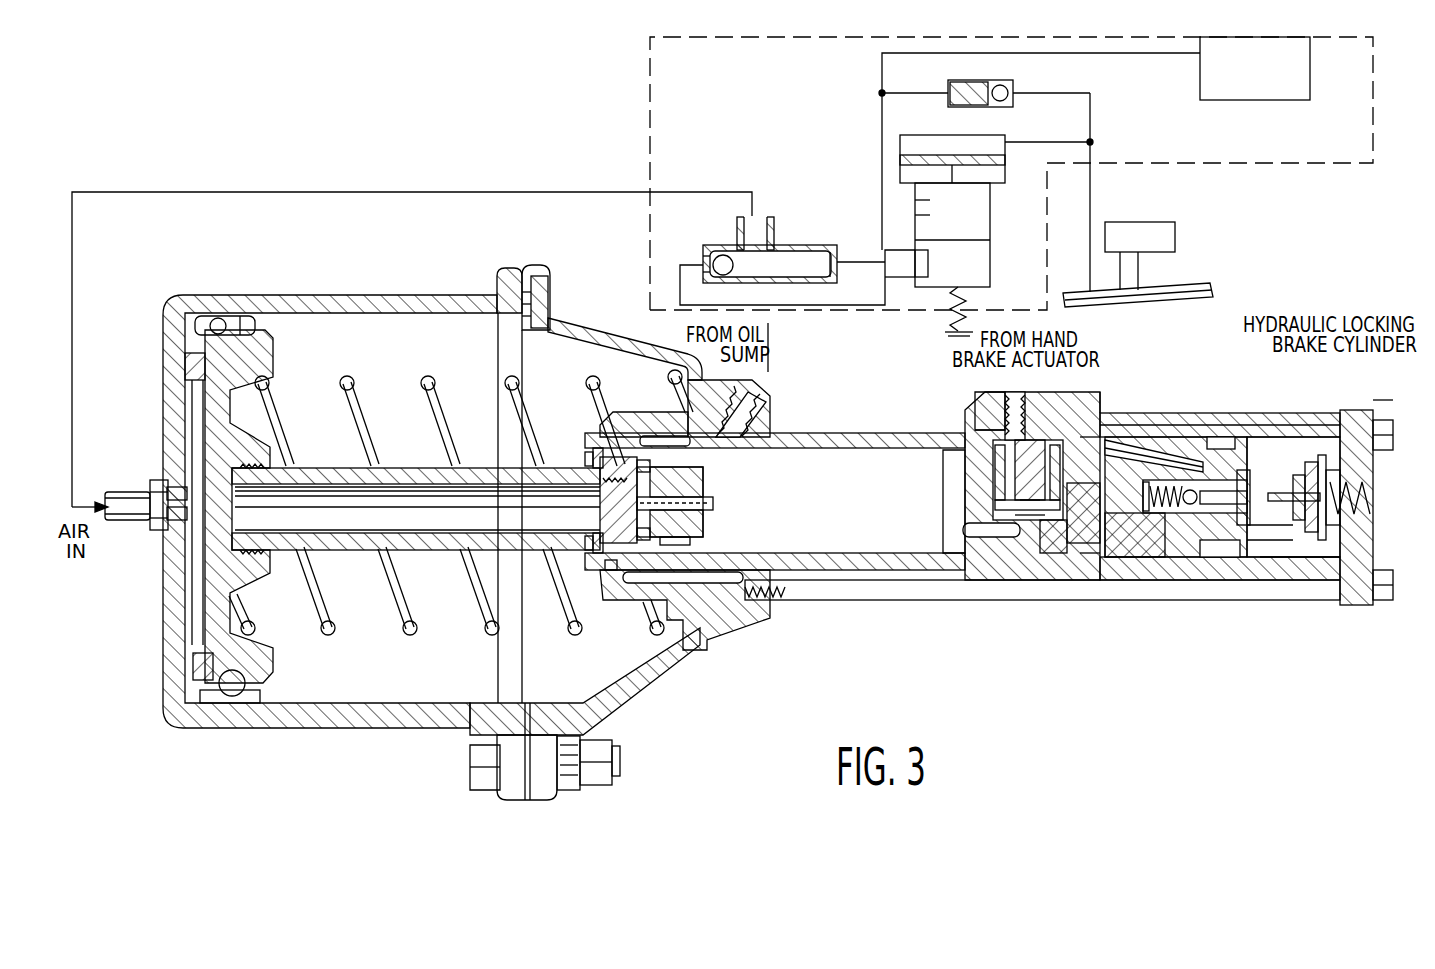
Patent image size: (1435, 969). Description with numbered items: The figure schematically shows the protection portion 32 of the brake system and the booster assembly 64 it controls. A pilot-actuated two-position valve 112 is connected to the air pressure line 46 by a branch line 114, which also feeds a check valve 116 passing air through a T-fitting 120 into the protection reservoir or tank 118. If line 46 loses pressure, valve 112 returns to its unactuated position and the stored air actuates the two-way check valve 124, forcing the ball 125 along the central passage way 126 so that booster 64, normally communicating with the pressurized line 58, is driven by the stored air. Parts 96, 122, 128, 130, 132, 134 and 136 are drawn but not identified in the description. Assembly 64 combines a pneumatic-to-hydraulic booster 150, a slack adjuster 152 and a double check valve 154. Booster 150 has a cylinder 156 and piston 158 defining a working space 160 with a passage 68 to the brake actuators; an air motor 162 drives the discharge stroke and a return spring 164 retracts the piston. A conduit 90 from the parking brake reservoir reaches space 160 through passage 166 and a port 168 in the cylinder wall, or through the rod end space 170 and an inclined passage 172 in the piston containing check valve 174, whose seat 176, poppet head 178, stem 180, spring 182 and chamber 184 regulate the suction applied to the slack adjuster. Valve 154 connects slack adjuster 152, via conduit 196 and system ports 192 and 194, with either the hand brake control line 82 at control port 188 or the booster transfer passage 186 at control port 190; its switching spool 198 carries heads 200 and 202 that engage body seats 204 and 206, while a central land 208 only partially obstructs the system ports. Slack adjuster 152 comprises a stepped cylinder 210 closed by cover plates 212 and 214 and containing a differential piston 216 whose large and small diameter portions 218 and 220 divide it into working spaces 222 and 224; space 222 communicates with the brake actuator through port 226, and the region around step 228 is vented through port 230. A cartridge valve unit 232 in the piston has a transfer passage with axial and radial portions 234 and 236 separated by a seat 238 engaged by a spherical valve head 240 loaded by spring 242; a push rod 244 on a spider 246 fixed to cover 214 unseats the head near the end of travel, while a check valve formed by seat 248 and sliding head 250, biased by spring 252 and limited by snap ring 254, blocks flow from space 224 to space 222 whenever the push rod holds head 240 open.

The protection portion 32 is at (646, 128).
The air pressure line 46 is at (1210, 290).
The pressurized line 58 is at (858, 262).
The booster 64 is at (614, 312).
The passage 68 is at (1410, 357).
The hand brake control line 82 is at (1033, 428).
The conduit 90 is at (755, 405).
The pedal pad 96 is at (1175, 240).
The two-position valve 112 is at (992, 215).
The branch line 114 is at (1093, 142).
The check valve 116 is at (1010, 105).
The protection reservoir 118 is at (1310, 70).
The T-fitting 120 is at (879, 93).
The air line 122 is at (822, 305).
The two-way check valve 124 is at (817, 240).
The ball 125 is at (722, 255).
The central passage way 126 is at (700, 192).
The valve port 128 is at (705, 258).
The valve outlet 130 is at (834, 266).
The valve fitting 132 is at (766, 220).
The air inlet shaft 134 is at (125, 495).
The inlet nut 136 is at (158, 488).
The pneumatic-to-hydraulic booster 150 is at (825, 432).
The slack adjuster 152 is at (1247, 603).
The double check valve 154 is at (1090, 396).
The cylinder 156 is at (878, 433).
The reciprocable piston 158 is at (598, 455).
The working space 160 is at (841, 529).
The air motor 162 is at (186, 356).
The return spring 164 is at (352, 384).
The passage 166 is at (660, 431).
The port 168 is at (660, 440).
The rod end space 170 is at (597, 440).
The passage 172 is at (697, 472).
The check valve 174 is at (748, 483).
The seat 176 is at (703, 490).
The poppet head 178 is at (713, 503).
The reciprocable stem 180 is at (703, 522).
The coil compression spring 182 is at (620, 572).
The chamber 184 is at (690, 542).
The booster transfer passage 186 is at (975, 535).
The control port 188 is at (1016, 398).
The control port 190 is at (1023, 520).
The system port 192 is at (1060, 450).
The system port 194 is at (1068, 520).
The conduit 196 is at (1084, 482).
The switching spool 198 is at (962, 470).
The valve head 200 is at (1088, 432).
The valve head 202 is at (968, 517).
The body seat 204 is at (967, 422).
The body seat 206 is at (1033, 517).
The central land 208 is at (1015, 487).
The stepped cylinder 210 is at (1262, 415).
The cover plate 212 is at (1092, 557).
The cover plate 214 is at (1365, 458).
The differential area reciprocable piston 216 is at (1215, 557).
The large diameter portion 218 is at (1177, 538).
The small diameter portion 220 is at (1249, 455).
The working space 222 is at (1163, 466).
The working space 224 is at (1298, 560).
The port 226 is at (1372, 498).
The step 228 is at (1213, 545).
The port 230 is at (1222, 425).
The cartridge type valve unit 232 is at (1150, 504).
The axial portion 234 is at (1250, 525).
The radial portion 236 is at (1178, 470).
The seat 238 is at (1200, 480).
The spherical valve head 240 is at (1248, 540).
The coil compression spring 242 is at (1170, 510).
The push rod 244 is at (1290, 492).
The spider 246 is at (1330, 437).
The seat 248 is at (1245, 497).
The head 250 is at (1327, 523).
The coil compression spring 252 is at (1318, 485).
The snap ring 254 is at (1297, 513).